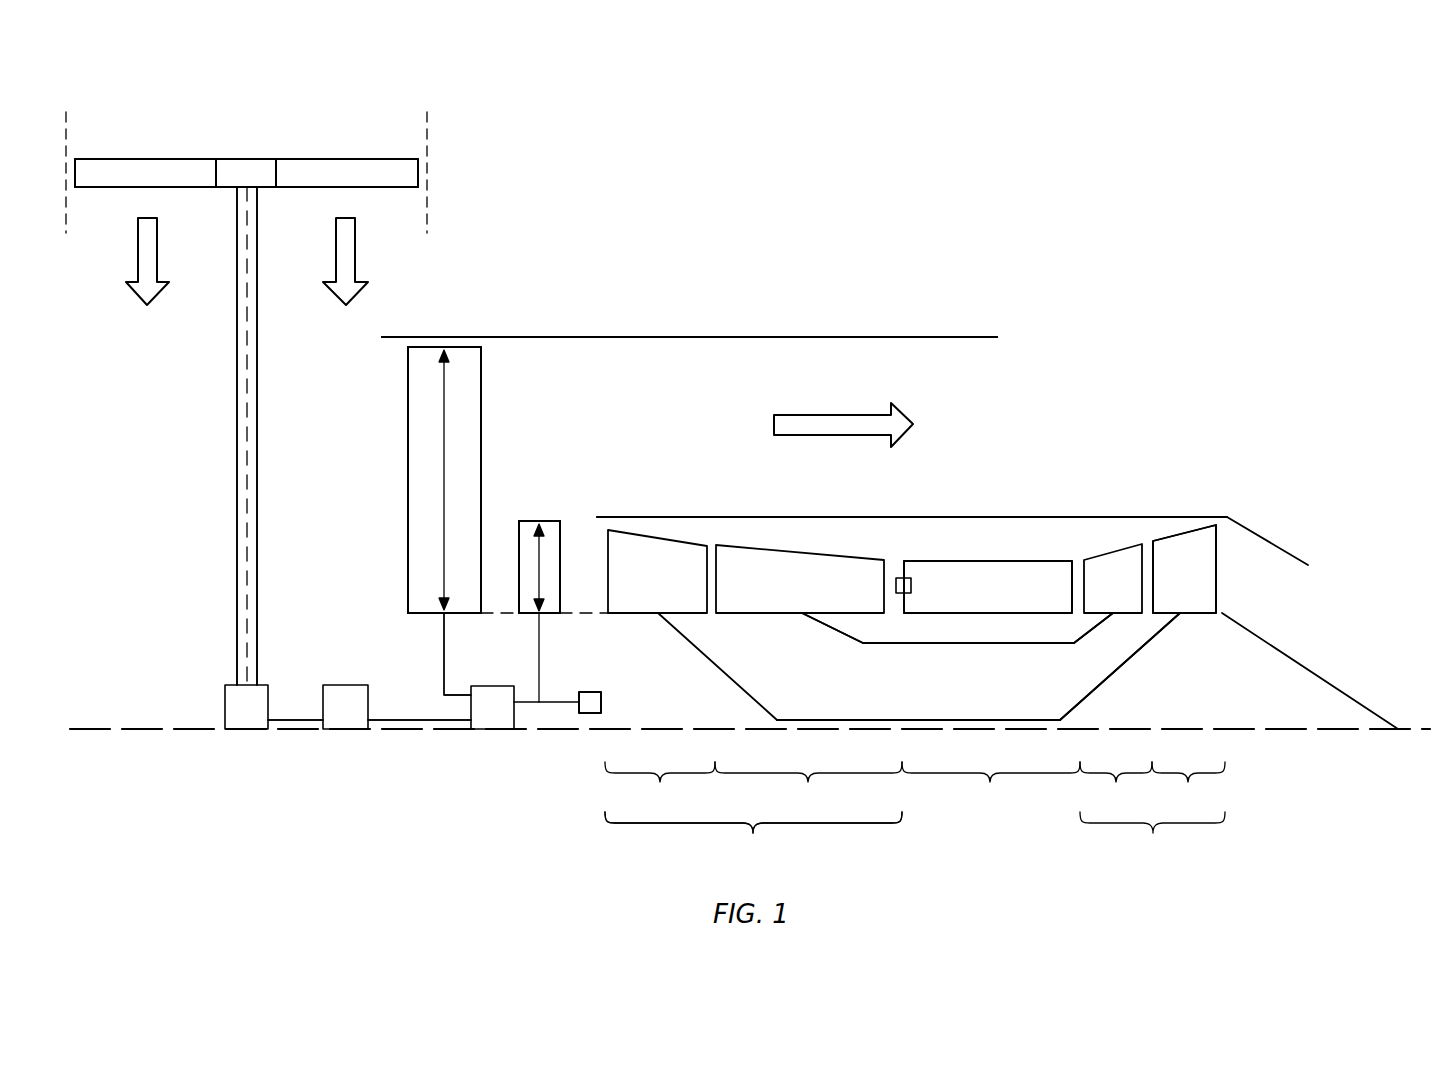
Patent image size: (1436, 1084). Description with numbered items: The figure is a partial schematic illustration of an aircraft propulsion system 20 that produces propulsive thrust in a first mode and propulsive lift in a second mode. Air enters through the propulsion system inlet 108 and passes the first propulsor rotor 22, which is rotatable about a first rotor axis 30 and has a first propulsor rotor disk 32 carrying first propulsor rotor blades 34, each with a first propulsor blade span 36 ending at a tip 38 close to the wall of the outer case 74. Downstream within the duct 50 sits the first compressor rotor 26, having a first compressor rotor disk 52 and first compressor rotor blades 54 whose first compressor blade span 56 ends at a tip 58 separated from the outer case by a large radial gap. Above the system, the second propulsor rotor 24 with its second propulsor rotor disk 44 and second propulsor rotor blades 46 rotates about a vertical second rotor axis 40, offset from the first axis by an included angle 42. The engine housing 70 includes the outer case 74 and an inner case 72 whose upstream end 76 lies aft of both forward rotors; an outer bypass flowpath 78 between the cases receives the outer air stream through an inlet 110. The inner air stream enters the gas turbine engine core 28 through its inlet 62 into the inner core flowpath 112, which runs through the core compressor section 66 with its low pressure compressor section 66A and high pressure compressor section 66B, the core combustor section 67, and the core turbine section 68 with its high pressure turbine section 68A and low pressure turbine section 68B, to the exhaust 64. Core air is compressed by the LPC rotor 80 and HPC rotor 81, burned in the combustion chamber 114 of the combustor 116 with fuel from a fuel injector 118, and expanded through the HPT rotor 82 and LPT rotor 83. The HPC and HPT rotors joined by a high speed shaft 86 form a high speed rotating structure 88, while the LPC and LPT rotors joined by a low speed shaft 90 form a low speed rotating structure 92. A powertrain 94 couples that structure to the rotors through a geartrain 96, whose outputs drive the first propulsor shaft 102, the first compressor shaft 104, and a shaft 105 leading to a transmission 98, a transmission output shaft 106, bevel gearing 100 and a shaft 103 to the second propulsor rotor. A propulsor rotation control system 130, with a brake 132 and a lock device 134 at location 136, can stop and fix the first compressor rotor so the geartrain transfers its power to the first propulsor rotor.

The propulsion system 20 is at (1037, 211).
The first propulsor rotor 22 is at (488, 411).
The second propulsor rotor 24 is at (378, 155).
The first compressor rotor 26 is at (562, 510).
The gas turbine engine core 28 is at (944, 812).
The first rotor axis 30 is at (1373, 731).
The first propulsor rotor disk 32 is at (444, 645).
The first propulsor rotor blades 34 is at (408, 461).
The first propulsor blade span 36 is at (443, 480).
The tip 38 is at (465, 346).
The second rotor axis 40 is at (245, 403).
The included angle 42 is at (240, 606).
The second propulsor rotor disk 44 is at (247, 158).
The second propulsor rotor blades 46 is at (147, 158).
The duct 50 is at (585, 349).
The first compressor rotor disk 52 is at (540, 652).
The first compressor rotor blades 54 is at (519, 553).
The first compressor blade span 56 is at (539, 567).
The tip 58 is at (543, 520).
The inlet 62 is at (590, 588).
The exhaust 64 is at (1308, 623).
The core compressor section 66 is at (753, 839).
The low pressure compressor section 66A is at (660, 790).
The high pressure compressor section 66B is at (808, 790).
The core combustor section 67 is at (991, 790).
The core turbine section 68 is at (1152, 839).
The high pressure turbine section 68A is at (1116, 790).
The low pressure turbine section 68B is at (1188, 790).
The engine housing 70 is at (833, 308).
The inner case 72 is at (958, 516).
The outer case 74 is at (720, 336).
The upstream end 76 is at (627, 516).
The outer bypass flowpath 78 is at (690, 449).
The LPC rotor 80 is at (657, 589).
The HPC rotor 81 is at (777, 596).
The HPT rotor 82 is at (1105, 596).
The LPT rotor 83 is at (1175, 588).
The high speed shaft 86 is at (872, 645).
The high speed rotating structure 88 is at (953, 648).
The low speed shaft 90 is at (795, 716).
The low speed rotating structure 92 is at (1093, 704).
The powertrain 94 is at (366, 778).
The geartrain 96 is at (480, 722).
The transmission 98 is at (333, 722).
The gearing 100 is at (232, 722).
The first propulsor shaft 102 is at (458, 690).
The shaft 103 is at (237, 478).
The first compressor shaft 104 is at (590, 692).
The shaft 105 is at (413, 731).
The transmission output shaft 106 is at (294, 731).
The propulsion system inlet 108 is at (382, 393).
The inlet 110 is at (600, 378).
The inner core flowpath 112 is at (1230, 599).
The combustion chamber 114 is at (1016, 603).
The combustor 116 is at (1015, 560).
The fuel injector 118 is at (911, 586).
The propulsor rotation control system 130 is at (600, 735).
The brake 132 is at (601, 703).
The lock device 134 is at (590, 702).
The location 136 is at (590, 702).